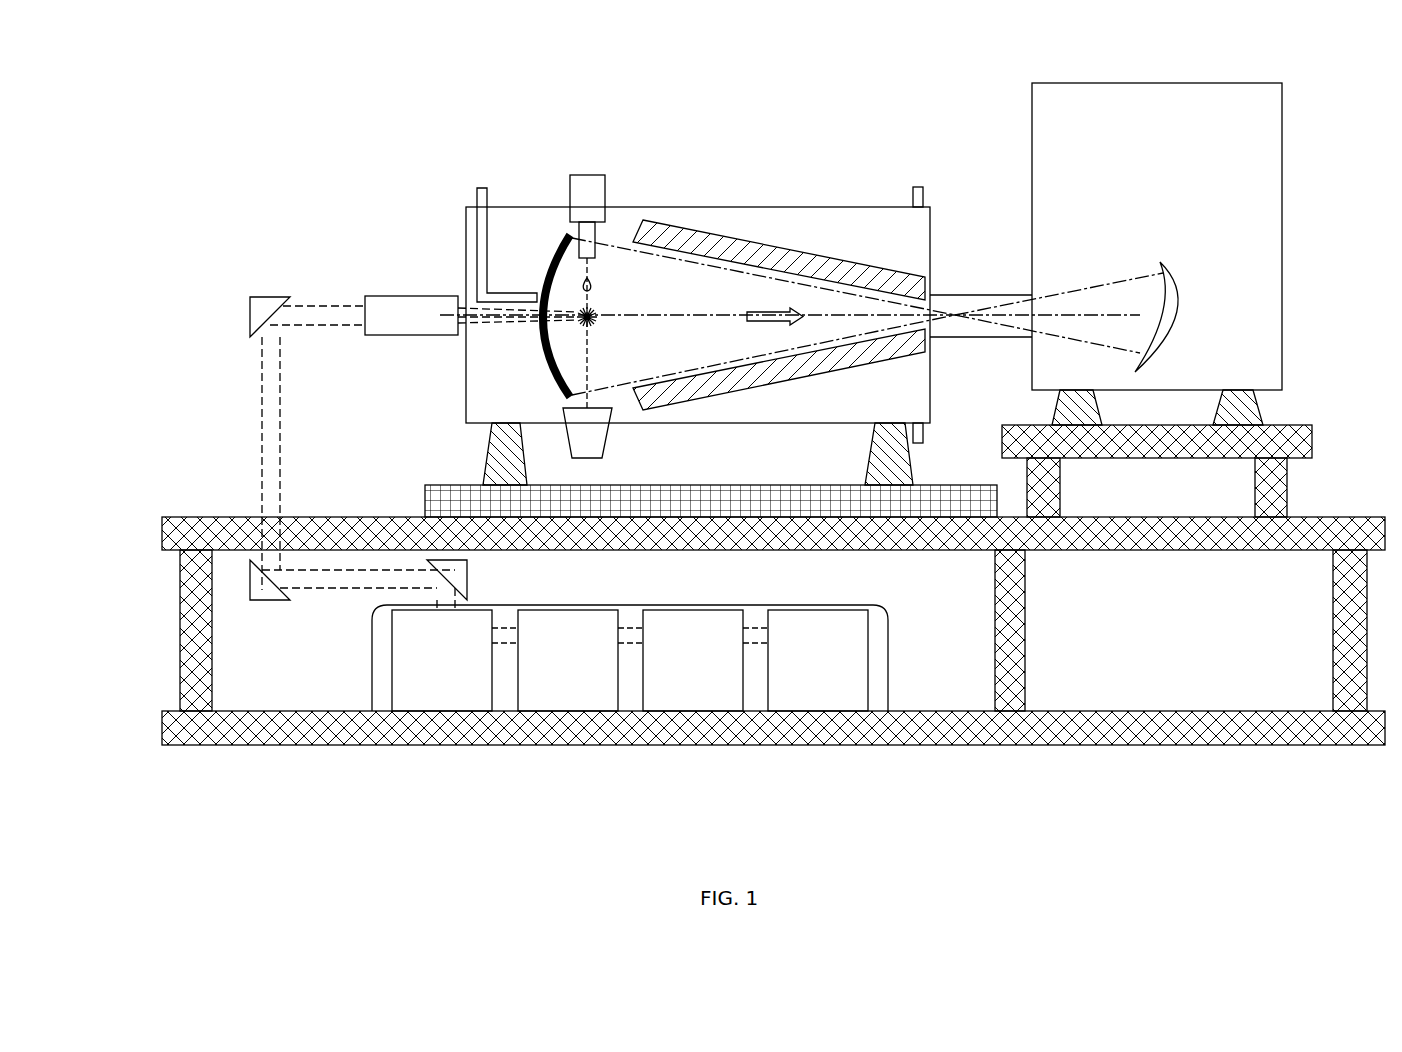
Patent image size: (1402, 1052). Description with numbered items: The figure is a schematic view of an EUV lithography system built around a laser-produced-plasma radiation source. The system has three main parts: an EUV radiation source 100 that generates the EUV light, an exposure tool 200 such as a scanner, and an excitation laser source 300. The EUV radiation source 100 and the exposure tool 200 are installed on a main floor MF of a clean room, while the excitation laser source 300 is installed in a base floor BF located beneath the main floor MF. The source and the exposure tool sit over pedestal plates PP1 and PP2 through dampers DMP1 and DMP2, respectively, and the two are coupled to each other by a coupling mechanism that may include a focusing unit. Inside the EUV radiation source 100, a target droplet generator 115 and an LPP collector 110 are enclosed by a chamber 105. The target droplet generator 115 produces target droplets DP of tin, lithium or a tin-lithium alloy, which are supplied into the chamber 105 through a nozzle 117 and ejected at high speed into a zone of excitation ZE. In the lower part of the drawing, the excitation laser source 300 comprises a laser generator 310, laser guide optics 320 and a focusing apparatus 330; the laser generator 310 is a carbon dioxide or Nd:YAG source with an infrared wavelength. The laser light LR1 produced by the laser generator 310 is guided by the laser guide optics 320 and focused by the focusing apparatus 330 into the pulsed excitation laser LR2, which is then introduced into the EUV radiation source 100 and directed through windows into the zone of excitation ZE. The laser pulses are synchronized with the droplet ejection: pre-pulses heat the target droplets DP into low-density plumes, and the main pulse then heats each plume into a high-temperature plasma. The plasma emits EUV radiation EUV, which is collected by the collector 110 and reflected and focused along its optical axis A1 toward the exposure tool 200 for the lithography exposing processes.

The EUV radiation source 100 is at (762, 118).
The chamber 105 is at (473, 207).
The LPP collector 110 is at (545, 258).
The target droplet generator 115 is at (592, 176).
The nozzle 117 is at (594, 252).
The target droplets DP is at (585, 280).
The zone of excitation ZE is at (585, 324).
The optical axis A1 is at (680, 313).
The EUV radiation EUV is at (773, 306).
The exposure tool 200 is at (1245, 94).
The excitation laser source 300 is at (333, 796).
The laser generator 310 is at (890, 663).
The laser guide optics 320 is at (218, 384).
The focusing apparatus 330 is at (380, 300).
The laser light LR1 is at (267, 423).
The excitation laser LR2 is at (497, 322).
The damper DMP1 is at (877, 455).
The damper DMP2 is at (1240, 410).
The pedestal plate PP1 is at (437, 505).
The pedestal plate PP2 is at (1300, 427).
The main floor MF is at (167, 523).
The base floor BF is at (253, 743).